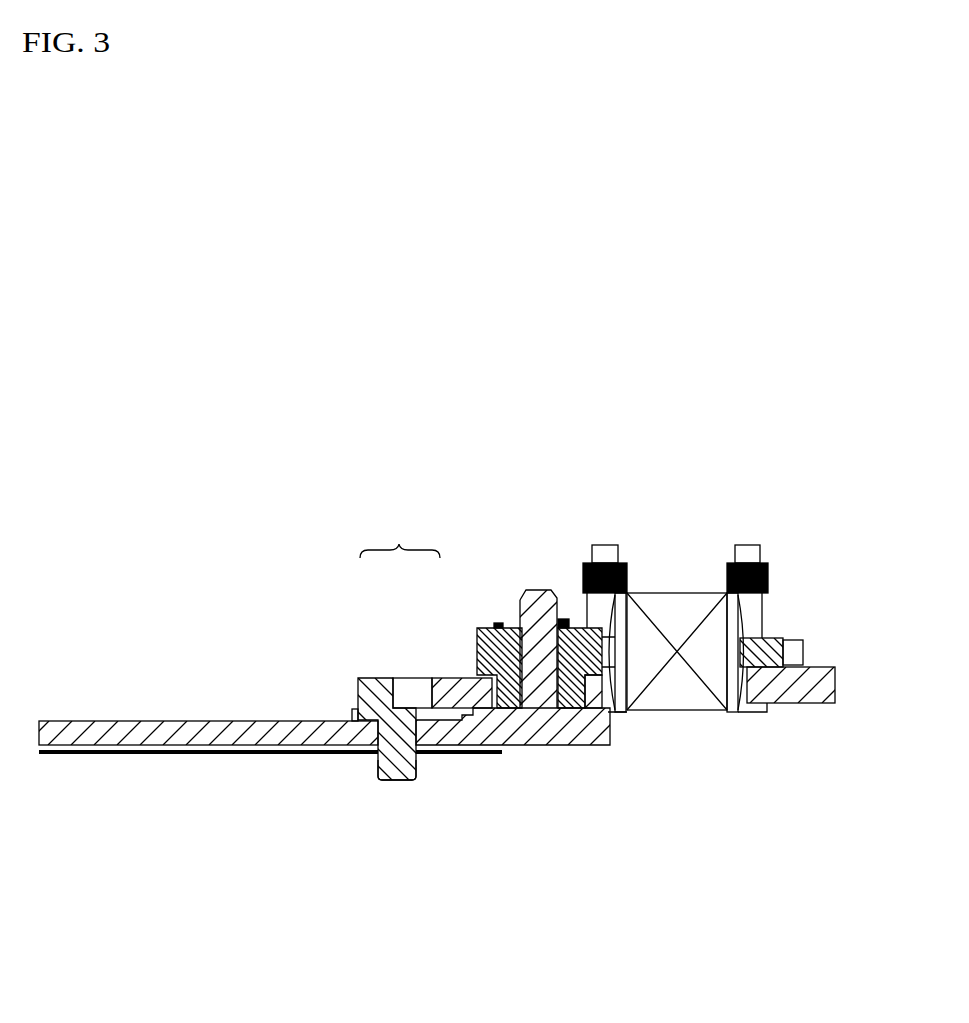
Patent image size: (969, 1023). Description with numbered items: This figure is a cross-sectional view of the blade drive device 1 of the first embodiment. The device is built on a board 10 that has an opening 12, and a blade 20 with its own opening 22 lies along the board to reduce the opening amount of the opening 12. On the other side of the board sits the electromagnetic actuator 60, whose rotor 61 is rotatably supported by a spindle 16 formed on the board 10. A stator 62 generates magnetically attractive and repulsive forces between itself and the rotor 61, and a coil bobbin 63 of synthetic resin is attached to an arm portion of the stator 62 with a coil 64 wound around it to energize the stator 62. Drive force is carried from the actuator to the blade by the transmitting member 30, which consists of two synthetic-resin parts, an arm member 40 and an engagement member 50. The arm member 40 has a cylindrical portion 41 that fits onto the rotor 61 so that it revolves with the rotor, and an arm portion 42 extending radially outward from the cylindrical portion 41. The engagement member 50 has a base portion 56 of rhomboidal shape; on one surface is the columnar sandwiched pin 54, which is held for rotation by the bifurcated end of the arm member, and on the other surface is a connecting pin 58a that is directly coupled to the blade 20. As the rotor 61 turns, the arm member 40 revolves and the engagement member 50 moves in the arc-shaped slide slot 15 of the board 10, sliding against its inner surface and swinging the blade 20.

The blade drive device 1 is at (209, 616).
The board 10 is at (565, 758).
The opening 12 is at (55, 740).
The slide slot 15 is at (378, 750).
The spindle 16 is at (535, 600).
The blade 20 is at (202, 762).
The opening 22 is at (52, 758).
The transmitting member 30 is at (400, 532).
The arm member 40 is at (450, 672).
The cylindrical portion 41 is at (598, 703).
The arm portion 42 is at (477, 750).
The engagement member 50 is at (409, 698).
The sandwiched pin 54 is at (370, 678).
The base portion 56 is at (350, 712).
The connecting pin 58a is at (402, 778).
The electromagnetic actuator 60 is at (822, 650).
The rotor 61 is at (485, 628).
The stator 62 is at (778, 637).
The coil bobbin 63 is at (758, 607).
The coil 64 is at (678, 612).